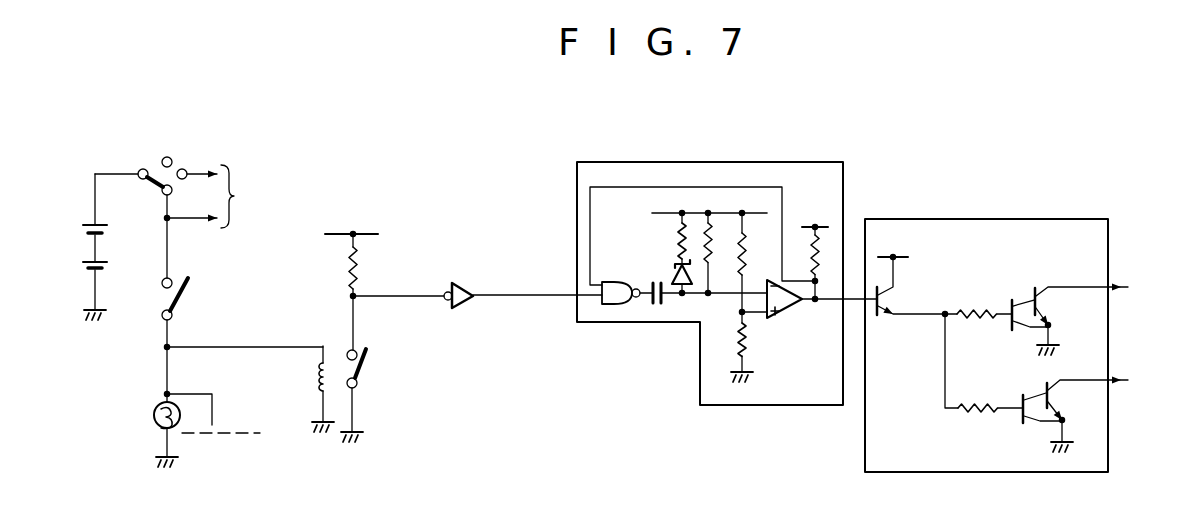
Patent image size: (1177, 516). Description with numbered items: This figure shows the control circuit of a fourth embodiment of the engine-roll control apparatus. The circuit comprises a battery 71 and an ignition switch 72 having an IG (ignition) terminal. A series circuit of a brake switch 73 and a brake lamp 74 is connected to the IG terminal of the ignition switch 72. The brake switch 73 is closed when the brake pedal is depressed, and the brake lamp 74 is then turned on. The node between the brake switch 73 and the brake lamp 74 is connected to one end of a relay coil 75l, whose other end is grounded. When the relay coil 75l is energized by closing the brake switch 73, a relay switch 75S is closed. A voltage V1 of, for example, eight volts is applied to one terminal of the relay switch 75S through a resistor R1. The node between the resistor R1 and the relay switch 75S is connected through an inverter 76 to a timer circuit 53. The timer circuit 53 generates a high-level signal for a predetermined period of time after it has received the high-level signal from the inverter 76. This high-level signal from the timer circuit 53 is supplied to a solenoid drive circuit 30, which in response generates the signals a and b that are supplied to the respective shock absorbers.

The ignition switch 72 is at (205, 144).
The battery 71 is at (98, 237).
The brake switch 73 is at (185, 298).
The brake lamp 74 is at (155, 413).
The relay coil 75l is at (318, 377).
The relay switch 75S is at (363, 370).
The resistor R1 is at (362, 263).
The inverter 76 is at (467, 290).
The timer circuit 53 is at (575, 185).
The solenoid drive circuit 30 is at (940, 218).